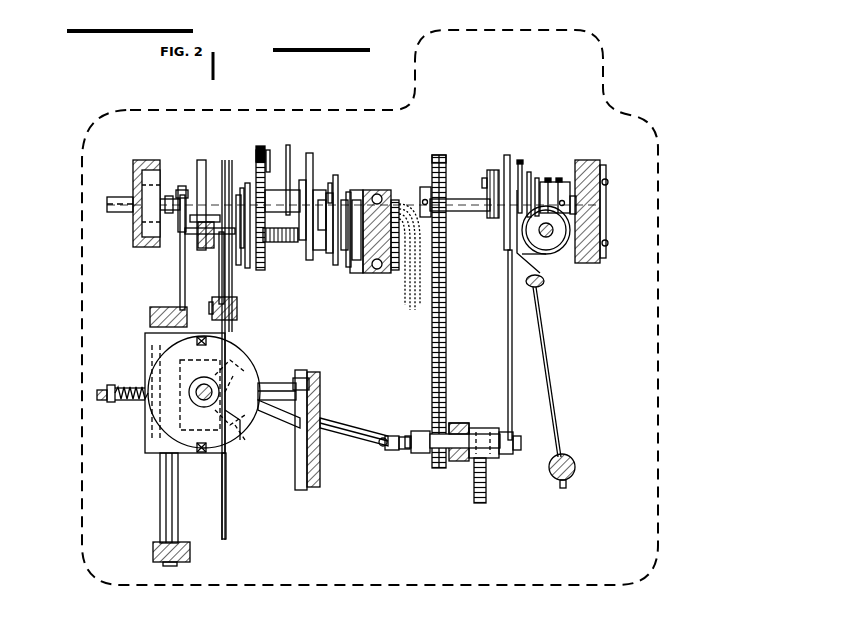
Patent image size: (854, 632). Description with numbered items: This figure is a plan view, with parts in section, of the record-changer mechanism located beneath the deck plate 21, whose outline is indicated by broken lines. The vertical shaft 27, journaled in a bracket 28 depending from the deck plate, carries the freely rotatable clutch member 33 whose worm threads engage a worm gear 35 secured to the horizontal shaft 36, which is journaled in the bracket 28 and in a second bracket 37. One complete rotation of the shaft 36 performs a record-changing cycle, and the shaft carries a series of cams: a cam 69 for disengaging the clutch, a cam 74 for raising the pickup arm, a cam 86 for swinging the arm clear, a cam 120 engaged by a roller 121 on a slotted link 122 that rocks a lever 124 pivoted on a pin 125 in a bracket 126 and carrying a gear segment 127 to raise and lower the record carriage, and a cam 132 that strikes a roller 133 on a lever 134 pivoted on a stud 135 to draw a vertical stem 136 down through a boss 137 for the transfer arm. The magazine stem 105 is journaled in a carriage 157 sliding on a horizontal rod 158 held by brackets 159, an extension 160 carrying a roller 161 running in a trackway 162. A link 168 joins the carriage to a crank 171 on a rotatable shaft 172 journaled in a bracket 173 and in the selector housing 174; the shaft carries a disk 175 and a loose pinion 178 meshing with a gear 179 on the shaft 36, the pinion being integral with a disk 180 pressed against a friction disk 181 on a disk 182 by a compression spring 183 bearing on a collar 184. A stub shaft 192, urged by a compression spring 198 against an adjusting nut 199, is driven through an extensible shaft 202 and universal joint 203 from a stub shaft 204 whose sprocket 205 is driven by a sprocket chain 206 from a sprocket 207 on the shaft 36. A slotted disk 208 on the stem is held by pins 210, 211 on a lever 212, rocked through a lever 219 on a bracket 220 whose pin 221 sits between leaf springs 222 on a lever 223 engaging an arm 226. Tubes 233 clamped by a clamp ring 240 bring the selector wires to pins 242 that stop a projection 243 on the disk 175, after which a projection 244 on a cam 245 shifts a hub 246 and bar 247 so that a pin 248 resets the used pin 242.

The deck plate 21 is at (213, 585).
The vertical shaft 27 is at (553, 230).
The bracket 28 is at (598, 165).
The clutch member 33 is at (558, 248).
The worm gear 35 is at (550, 182).
The horizontal shaft 36 is at (455, 199).
The bracket 37 is at (136, 165).
The cam 69 is at (537, 178).
The cam 74 is at (288, 175).
The cam 86 is at (268, 150).
The vertical stem 105 is at (196, 394).
The cam 120 is at (504, 235).
The roller 121 is at (490, 170).
The link 122 is at (508, 350).
The lever 124 is at (483, 428).
The pin 125 is at (519, 443).
The bracket 126 is at (457, 423).
The gear segment 127 is at (486, 490).
The cam 132 is at (520, 160).
The roller 133 is at (529, 172).
The lever 134 is at (549, 375).
The stud 135 is at (544, 284).
The vertical stem 136 is at (570, 460).
The boss 137 is at (567, 485).
The carriage 157 is at (150, 450).
The horizontal rod 158 is at (161, 505).
The brackets 159 is at (150, 317).
The extension 160 is at (273, 383).
The roller 161 is at (302, 372).
The trackway 162 is at (322, 390).
The link 168 is at (181, 258).
The crank 171 is at (183, 186).
The rotatable shaft 172 is at (305, 262).
The bracket 173 is at (206, 248).
The selector housing 174 is at (376, 190).
The disk 175 is at (330, 183).
The pinion 178 is at (277, 244).
The gear 179 is at (260, 146).
The disk 180 is at (250, 262).
The friction disk 181 is at (247, 268).
The disk 182 is at (242, 270).
The compression spring 183 is at (263, 160).
The collar 184 is at (313, 252).
The stub shaft 192 is at (100, 392).
The compression spring 198 is at (125, 395).
The adjusting nut 199 is at (110, 398).
The extensible shaft 202 is at (358, 432).
The universal joint 203 is at (384, 450).
The stub shaft 204 is at (460, 462).
The sprocket 205 is at (421, 453).
The sprocket chain 206 is at (447, 325).
The sprocket 207 is at (437, 155).
The disk 208 is at (238, 440).
The pin 210 is at (210, 341).
The pin 211 is at (202, 453).
The lever 212 is at (226, 380).
The lever 219 is at (230, 160).
The bracket 220 is at (215, 300).
The pin 221 is at (222, 160).
The leaf springs 222 is at (201, 160).
The lever 223 is at (226, 525).
The arm 226 is at (242, 430).
The tubes 233 is at (410, 310).
The clamp ring 240 is at (424, 190).
The pins 242 is at (356, 275).
The projection 243 is at (348, 192).
The projection 244 is at (330, 265).
The cam 245 is at (307, 153).
The hub 246 is at (344, 270).
The bar 247 is at (318, 190).
The pin 248 is at (335, 175).